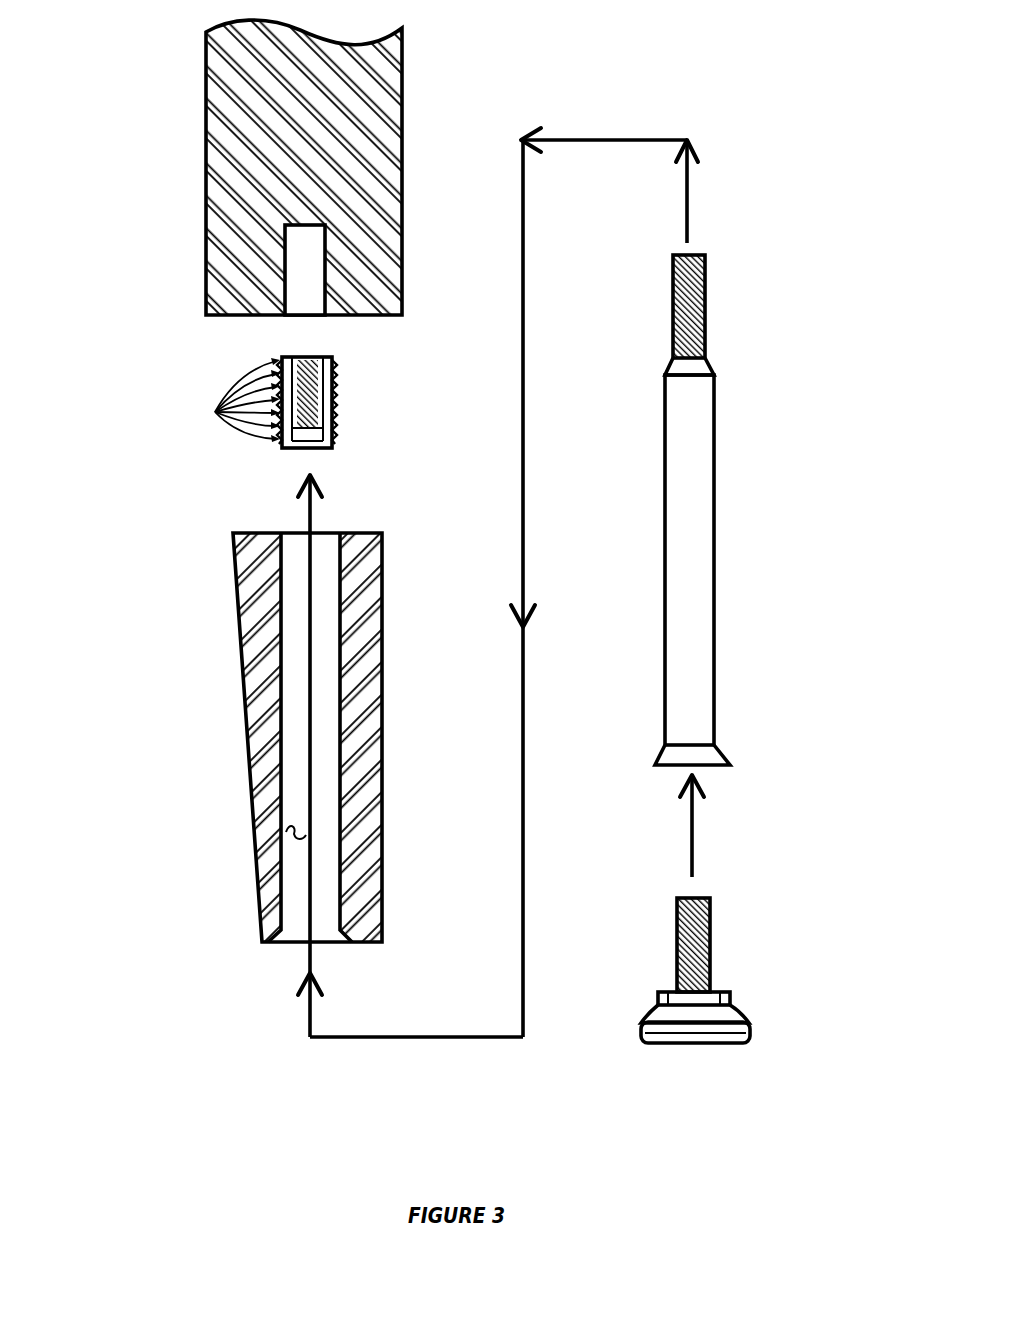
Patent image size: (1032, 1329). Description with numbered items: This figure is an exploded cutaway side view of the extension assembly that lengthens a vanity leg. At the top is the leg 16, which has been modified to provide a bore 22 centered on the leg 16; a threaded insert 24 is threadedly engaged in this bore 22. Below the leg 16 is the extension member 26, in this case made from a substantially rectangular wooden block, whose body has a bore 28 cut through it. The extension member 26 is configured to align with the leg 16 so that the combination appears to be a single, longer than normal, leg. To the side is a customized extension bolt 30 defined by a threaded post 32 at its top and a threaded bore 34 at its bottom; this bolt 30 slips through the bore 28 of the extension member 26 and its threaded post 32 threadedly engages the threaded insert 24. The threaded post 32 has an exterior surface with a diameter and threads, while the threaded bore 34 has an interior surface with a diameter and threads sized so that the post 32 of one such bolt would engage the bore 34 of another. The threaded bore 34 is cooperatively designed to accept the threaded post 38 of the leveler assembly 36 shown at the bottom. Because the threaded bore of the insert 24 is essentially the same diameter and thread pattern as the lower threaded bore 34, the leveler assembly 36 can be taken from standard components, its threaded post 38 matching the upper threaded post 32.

The leg 16 is at (206, 133).
The bore 22 is at (258, 277).
The threaded insert 24 is at (348, 370).
The extension member 26 is at (241, 629).
The bore 28 is at (286, 832).
The extension bolt 30 is at (762, 459).
The threaded post 32 is at (705, 282).
The threaded bore 34 is at (714, 778).
The leveler assembly 36 is at (761, 1043).
The threaded post 38 is at (712, 940).